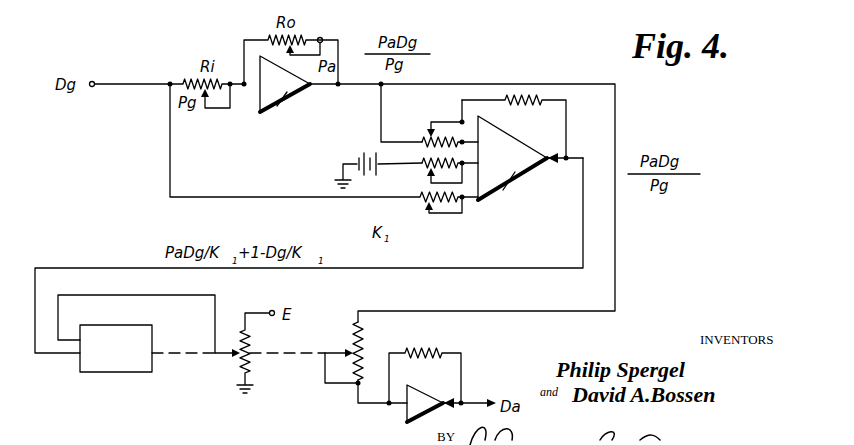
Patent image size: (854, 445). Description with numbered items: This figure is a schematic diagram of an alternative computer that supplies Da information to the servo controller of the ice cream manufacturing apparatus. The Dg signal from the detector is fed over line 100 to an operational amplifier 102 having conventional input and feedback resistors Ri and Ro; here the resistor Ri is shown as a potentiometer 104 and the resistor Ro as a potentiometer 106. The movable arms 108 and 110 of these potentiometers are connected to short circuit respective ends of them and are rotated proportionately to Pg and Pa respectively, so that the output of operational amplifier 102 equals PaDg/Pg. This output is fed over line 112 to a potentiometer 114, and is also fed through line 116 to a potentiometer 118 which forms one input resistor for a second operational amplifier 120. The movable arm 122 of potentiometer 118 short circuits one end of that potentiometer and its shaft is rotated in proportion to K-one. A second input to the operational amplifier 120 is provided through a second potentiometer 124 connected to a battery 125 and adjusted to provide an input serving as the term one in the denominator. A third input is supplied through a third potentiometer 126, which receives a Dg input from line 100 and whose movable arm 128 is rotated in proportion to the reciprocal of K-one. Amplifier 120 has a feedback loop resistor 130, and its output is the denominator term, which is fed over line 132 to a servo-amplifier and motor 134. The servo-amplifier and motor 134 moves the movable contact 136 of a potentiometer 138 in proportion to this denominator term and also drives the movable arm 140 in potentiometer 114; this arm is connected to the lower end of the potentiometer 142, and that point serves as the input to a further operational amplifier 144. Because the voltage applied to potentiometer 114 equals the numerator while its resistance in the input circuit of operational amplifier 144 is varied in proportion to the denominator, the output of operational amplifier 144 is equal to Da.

The line 100 is at (136, 84).
The operational amplifier 102 is at (286, 100).
The potentiometer 104 is at (190, 80).
The potentiometer 106 is at (302, 40).
The movable arm 108 is at (205, 108).
The movable arm 110 is at (270, 40).
The line 112 is at (552, 84).
The potentiometer 114 is at (362, 345).
The line 116 is at (381, 108).
The potentiometer 118 is at (432, 147).
The second operational amplifier 120 is at (514, 173).
The movable arm 122 is at (426, 136).
The second potentiometer 124 is at (428, 170).
The battery 125 is at (366, 153).
The third potentiometer 126 is at (440, 214).
The movable arm 128 is at (425, 204).
The feedback loop resistor 130 is at (513, 104).
The line 132 is at (496, 268).
The servo-amplifier and motor 134 is at (132, 365).
The movable contact 136 is at (228, 360).
The potentiometer 138 is at (255, 340).
The movable arm 140 is at (337, 352).
The lower end of the potentiometer 142 is at (356, 385).
The operational amplifier 144 is at (414, 420).